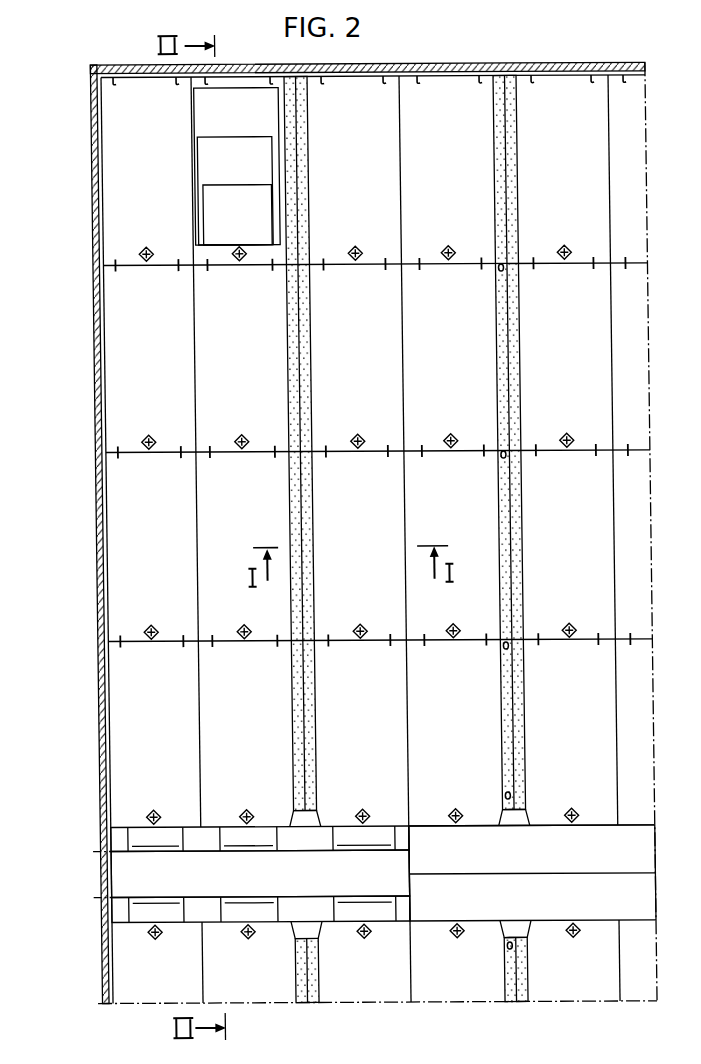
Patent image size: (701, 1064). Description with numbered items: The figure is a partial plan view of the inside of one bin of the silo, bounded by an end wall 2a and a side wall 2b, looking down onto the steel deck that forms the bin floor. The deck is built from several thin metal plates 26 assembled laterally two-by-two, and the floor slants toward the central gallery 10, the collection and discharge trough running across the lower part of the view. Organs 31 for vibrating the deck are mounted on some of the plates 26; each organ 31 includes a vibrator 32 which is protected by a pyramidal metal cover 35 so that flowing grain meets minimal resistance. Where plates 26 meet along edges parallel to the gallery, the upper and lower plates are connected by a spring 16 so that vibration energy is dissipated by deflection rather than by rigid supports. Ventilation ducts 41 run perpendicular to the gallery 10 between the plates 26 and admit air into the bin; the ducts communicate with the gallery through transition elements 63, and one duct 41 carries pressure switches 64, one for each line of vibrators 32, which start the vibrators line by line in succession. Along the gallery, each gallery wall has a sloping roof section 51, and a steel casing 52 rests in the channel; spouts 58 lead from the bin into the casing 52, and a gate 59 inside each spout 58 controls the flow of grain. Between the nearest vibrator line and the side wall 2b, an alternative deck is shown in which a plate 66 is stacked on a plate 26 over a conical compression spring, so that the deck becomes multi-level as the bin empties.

The end wall 2a is at (89, 580).
The side wall 2b is at (454, 69).
The central gallery 10 is at (579, 852).
The spring 16 is at (266, 456).
The metal plate 26 is at (166, 747).
The organ 31 is at (345, 436).
The vibrator 32 is at (438, 437).
The metal cover 35 is at (350, 626).
The ventilation duct 41 is at (292, 384).
The sloping roof section 51 is at (507, 890).
The steel casing 52 is at (117, 881).
The spout 58 is at (138, 841).
The gate 59 is at (137, 903).
The transition element 63 is at (298, 825).
The pressure switch 64 is at (493, 655).
The plate 66 is at (255, 124).